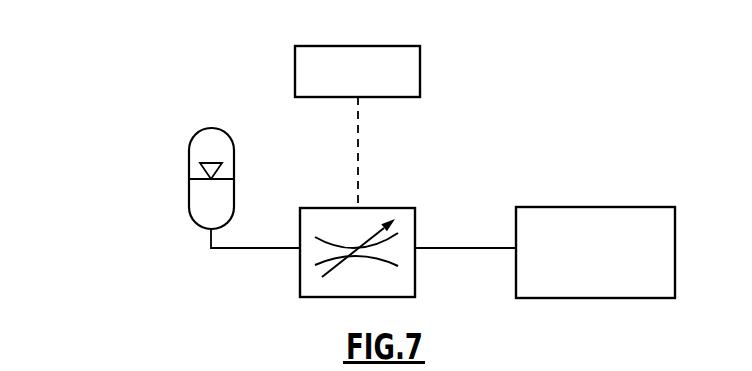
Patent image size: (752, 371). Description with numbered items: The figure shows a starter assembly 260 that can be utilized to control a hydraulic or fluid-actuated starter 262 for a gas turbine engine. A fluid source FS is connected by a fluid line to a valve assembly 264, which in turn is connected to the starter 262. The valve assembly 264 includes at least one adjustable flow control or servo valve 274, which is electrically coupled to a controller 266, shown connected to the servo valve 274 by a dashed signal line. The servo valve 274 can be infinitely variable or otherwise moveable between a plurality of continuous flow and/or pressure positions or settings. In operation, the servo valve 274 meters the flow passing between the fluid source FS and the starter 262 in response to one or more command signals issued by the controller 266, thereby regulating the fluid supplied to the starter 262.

The starter assembly 260 is at (149, 62).
The starter 262 is at (576, 263).
The valve assembly 264 is at (298, 152).
The controller 266 is at (338, 85).
The servo valve 274 is at (396, 208).
The fluid source FS is at (189, 161).